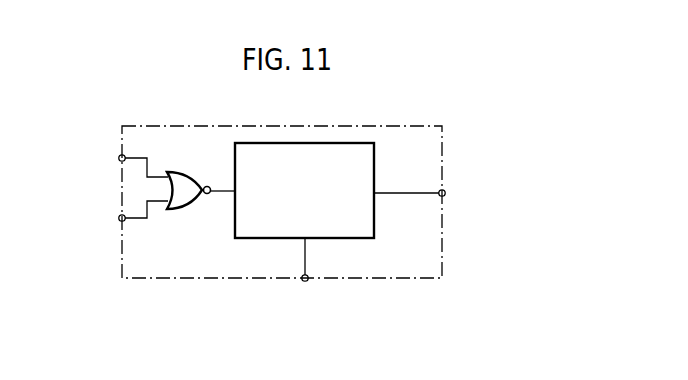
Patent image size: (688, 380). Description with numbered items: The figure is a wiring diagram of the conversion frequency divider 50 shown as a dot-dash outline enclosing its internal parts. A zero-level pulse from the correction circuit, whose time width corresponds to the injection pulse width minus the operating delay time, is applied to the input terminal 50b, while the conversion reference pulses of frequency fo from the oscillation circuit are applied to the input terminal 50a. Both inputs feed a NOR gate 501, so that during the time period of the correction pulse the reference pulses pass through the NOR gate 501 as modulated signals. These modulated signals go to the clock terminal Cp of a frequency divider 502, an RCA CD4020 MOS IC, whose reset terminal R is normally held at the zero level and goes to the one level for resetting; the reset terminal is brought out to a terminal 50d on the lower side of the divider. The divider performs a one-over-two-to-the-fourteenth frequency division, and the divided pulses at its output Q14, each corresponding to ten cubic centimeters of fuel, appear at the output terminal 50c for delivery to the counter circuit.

The conversion frequency divider 50 is at (362, 126).
The input terminal 50b is at (118, 158).
The input terminal 50a is at (118, 218).
The NOR gate 501 is at (180, 151).
The frequency divider 502 is at (375, 157).
The output terminal 50c is at (445, 194).
The reset terminal 50'd 50d is at (305, 281).